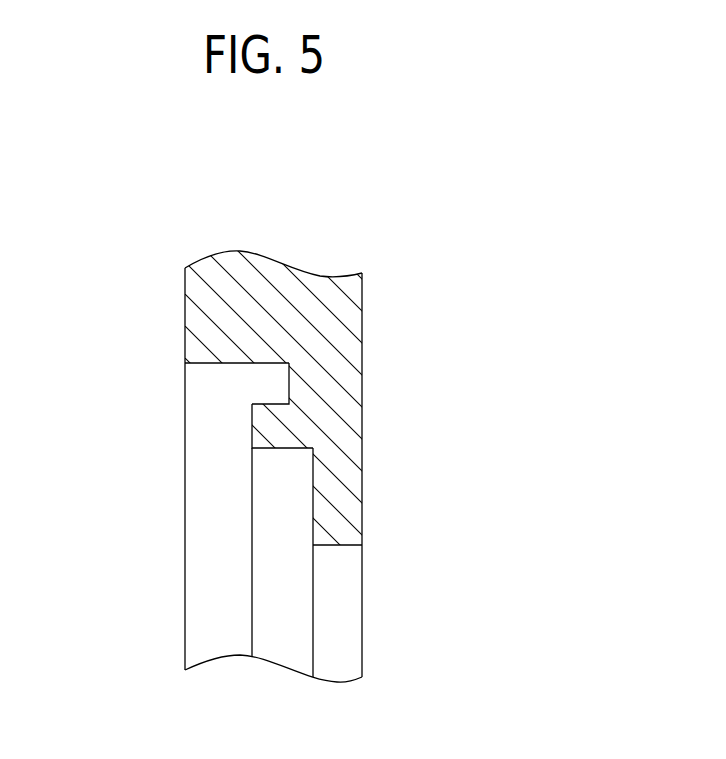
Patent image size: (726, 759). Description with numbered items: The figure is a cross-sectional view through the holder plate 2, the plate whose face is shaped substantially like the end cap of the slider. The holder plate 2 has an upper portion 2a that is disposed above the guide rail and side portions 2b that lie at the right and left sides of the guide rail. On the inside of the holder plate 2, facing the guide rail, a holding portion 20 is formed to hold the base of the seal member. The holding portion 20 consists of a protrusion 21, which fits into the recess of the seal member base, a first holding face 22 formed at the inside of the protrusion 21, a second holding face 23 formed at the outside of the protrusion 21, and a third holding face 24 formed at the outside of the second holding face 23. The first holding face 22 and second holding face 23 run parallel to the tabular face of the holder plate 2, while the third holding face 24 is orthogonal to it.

The holder plate 2 is at (392, 285).
The upper portion 2a is at (180, 291).
The side portion 2b is at (332, 608).
The holding portion 20 is at (88, 378).
The protrusion 21 is at (261, 435).
The first holding face 22 is at (313, 477).
The second holding face 23 is at (289, 393).
The third holding face 24 is at (220, 364).